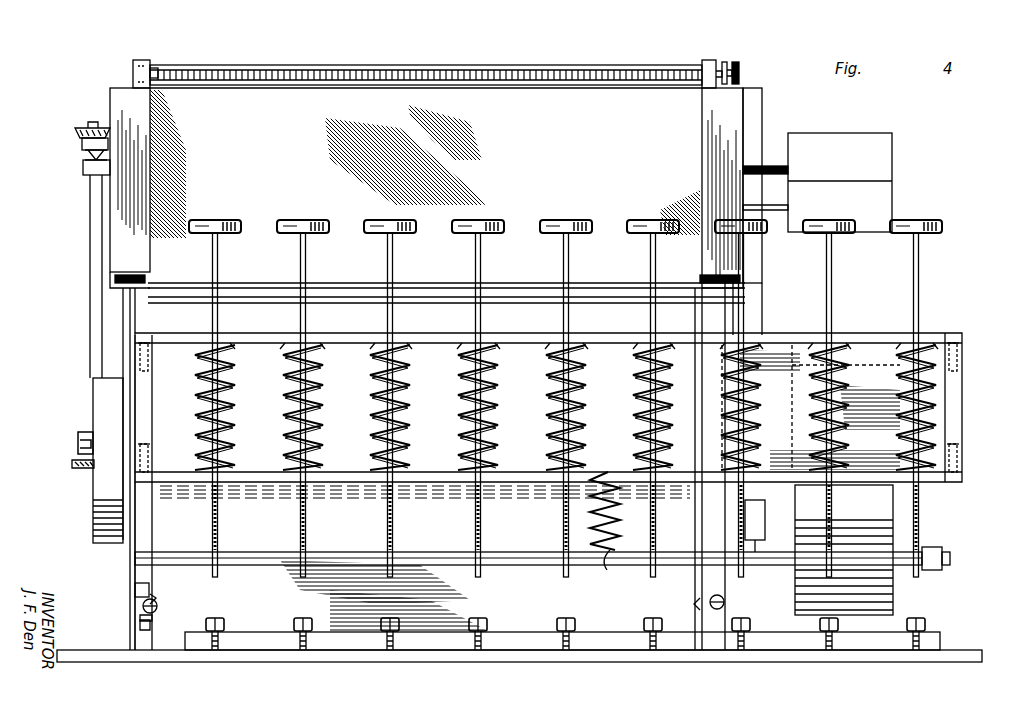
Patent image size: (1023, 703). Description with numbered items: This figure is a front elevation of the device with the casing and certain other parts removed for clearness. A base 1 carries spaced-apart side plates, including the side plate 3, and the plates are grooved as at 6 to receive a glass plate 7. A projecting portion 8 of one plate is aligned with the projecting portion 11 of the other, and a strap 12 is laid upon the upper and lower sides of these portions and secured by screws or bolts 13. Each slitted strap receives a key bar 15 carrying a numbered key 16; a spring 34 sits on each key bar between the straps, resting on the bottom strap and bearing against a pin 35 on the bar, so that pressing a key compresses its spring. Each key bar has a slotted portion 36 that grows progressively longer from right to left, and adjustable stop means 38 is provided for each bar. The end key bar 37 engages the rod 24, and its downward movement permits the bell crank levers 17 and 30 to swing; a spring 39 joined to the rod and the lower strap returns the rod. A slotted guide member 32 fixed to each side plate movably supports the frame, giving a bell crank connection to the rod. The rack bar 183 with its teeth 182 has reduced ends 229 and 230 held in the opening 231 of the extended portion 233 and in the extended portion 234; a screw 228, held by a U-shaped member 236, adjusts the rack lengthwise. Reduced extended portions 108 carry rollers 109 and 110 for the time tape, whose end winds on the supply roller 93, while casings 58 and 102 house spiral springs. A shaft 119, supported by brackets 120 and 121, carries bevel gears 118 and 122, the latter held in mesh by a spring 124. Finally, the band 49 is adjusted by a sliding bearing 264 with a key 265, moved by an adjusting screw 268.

The base 1 is at (538, 652).
The side plate 3 is at (140, 624).
The groove 6 is at (150, 280).
The glass plate 7 is at (310, 86).
The projecting portion 8 is at (145, 418).
The projecting portion 11 is at (962, 402).
The strap 12 is at (332, 338).
The screws or bolts 13 is at (152, 360).
The key bar 15 is at (218, 255).
The key 16 is at (300, 220).
The bell crank lever 17 is at (752, 520).
The rod 24 is at (268, 558).
The bell crank lever 30 is at (118, 505).
The guide member 32 is at (728, 106).
The spring 34 is at (318, 396).
The pin 35 is at (283, 347).
The slotted portion 36 is at (300, 526).
The end key bar 37 is at (945, 221).
The adjustable stop means 38 is at (470, 620).
The spring 39 is at (617, 504).
The band 49 is at (143, 606).
The casing 58 is at (105, 488).
The supply roller 93 is at (880, 588).
The casing 102 is at (755, 545).
The reduced extended portion 108 is at (765, 166).
The roller 109 is at (882, 150).
The roller 110 is at (882, 180).
The bevel gear 118 is at (80, 465).
The shaft 119 is at (92, 212).
The bracket 120 is at (80, 442).
The bracket 121 is at (90, 168).
The bevel gear 122 is at (92, 122).
The spring 124 is at (87, 155).
The teeth 182 is at (404, 72).
The rack bar 183 is at (243, 68).
The screw 228 is at (740, 73).
The reduced end 229 is at (158, 70).
The reduced end 230 is at (700, 68).
The opening 231 is at (133, 73).
The extended portion 233 is at (143, 60).
The extended portion 234 is at (710, 60).
The U-shaped member 236 is at (728, 64).
The sliding bearing 264 is at (156, 598).
The key 265 is at (140, 585).
The adjusting screw 268 is at (140, 618).